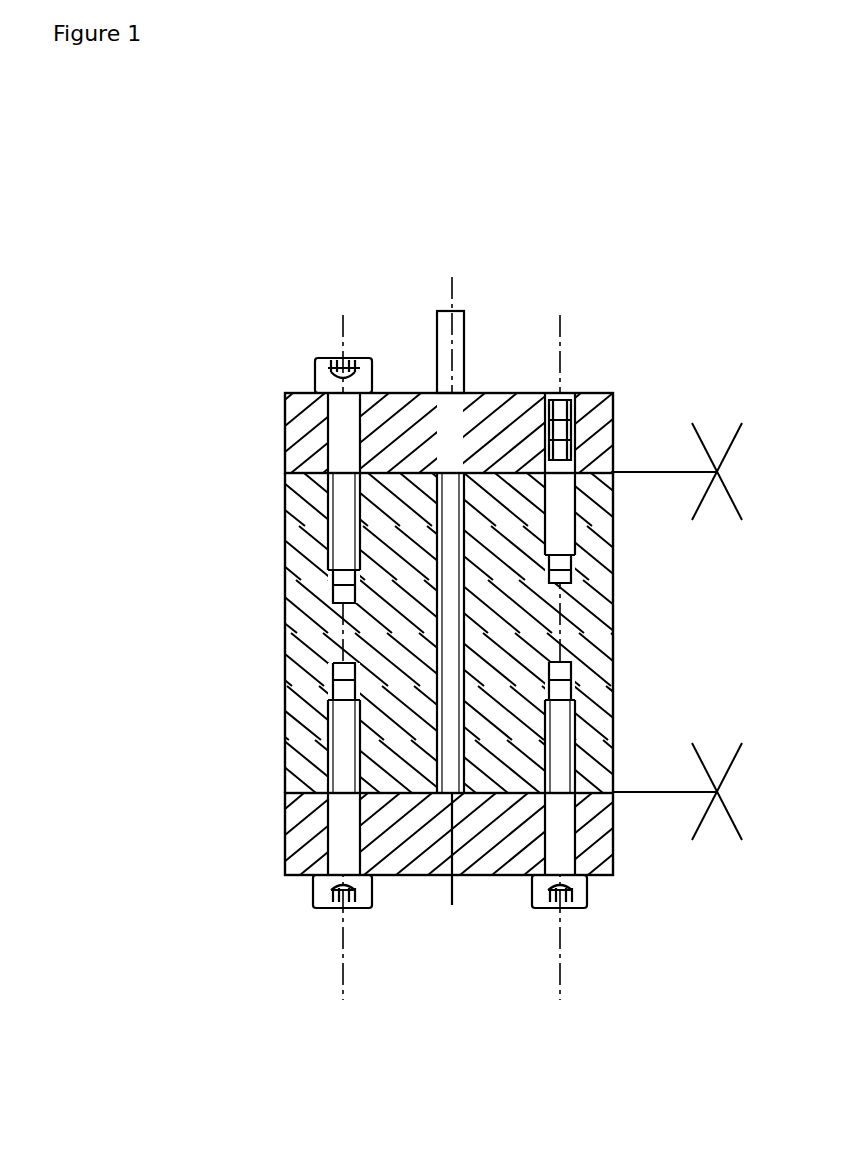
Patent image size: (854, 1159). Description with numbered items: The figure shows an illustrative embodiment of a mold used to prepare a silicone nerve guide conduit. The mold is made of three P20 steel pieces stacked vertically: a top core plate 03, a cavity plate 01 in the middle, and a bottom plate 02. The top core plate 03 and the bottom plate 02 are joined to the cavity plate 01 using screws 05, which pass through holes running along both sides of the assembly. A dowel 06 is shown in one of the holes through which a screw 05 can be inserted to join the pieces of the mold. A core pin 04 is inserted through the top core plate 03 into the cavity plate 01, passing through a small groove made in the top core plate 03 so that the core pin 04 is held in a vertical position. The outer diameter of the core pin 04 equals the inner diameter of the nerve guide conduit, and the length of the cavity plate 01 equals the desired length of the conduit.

The cavity plate 01 is at (364, 619).
The bottom plate 02 is at (363, 793).
The top core plate 03 is at (365, 404).
The core pin 04 is at (538, 562).
The screws 05 is at (255, 588).
The dowel 06 is at (639, 604).